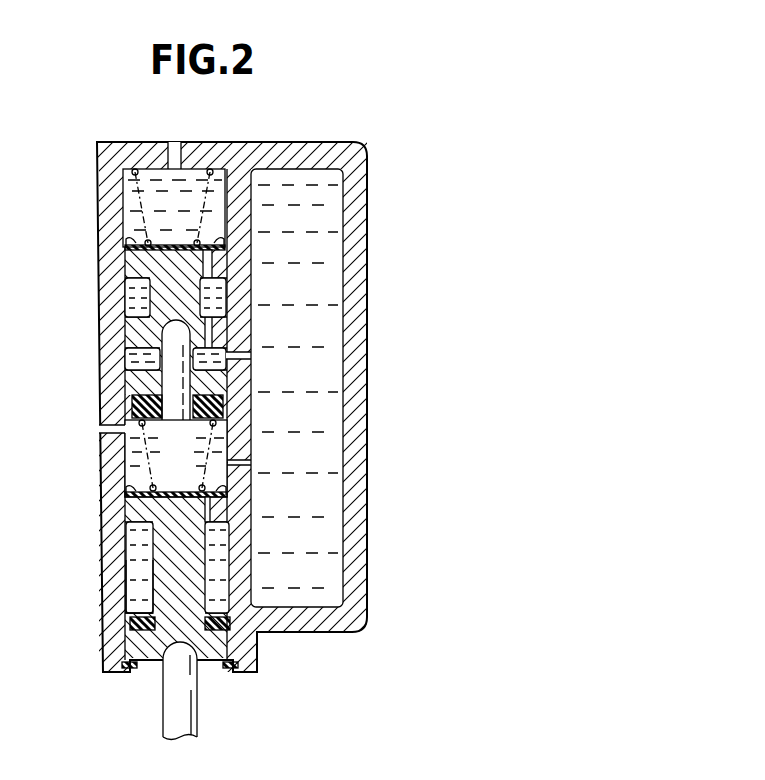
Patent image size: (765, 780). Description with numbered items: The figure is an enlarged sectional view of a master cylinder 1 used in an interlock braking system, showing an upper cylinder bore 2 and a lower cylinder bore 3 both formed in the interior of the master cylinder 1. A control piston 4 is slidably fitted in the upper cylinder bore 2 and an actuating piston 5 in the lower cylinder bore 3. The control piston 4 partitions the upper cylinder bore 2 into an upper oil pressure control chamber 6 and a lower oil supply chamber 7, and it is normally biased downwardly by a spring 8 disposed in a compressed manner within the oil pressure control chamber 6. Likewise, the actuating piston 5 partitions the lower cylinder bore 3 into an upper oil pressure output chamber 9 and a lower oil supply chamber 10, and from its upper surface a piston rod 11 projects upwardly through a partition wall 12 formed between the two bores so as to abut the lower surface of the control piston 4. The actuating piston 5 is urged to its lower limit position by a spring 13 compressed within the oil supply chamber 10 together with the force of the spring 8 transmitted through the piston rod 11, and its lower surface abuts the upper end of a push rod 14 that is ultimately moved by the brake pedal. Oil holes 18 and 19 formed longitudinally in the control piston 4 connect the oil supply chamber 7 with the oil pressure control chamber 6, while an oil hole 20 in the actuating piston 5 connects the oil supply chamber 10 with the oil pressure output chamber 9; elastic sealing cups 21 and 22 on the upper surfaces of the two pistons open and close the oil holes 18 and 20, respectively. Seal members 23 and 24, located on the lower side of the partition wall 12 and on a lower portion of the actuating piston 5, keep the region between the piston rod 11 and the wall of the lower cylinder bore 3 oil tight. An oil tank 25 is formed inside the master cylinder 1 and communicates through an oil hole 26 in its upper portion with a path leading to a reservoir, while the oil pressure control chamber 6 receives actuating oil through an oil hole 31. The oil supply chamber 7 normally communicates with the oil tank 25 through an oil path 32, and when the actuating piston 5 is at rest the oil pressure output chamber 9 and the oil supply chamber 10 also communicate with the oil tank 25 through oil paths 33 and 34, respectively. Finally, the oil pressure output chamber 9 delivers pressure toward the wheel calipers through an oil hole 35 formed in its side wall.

The master cylinder 1 is at (318, 130).
The upper cylinder bore 2 is at (122, 212).
The lower cylinder bore 3 is at (125, 535).
The control piston 4 is at (163, 240).
The actuating piston 5 is at (152, 660).
The oil pressure control chamber 6 is at (127, 200).
The oil supply chamber 7 is at (124, 362).
The spring 8 is at (211, 170).
The oil pressure output chamber 9 is at (135, 470).
The oil supply chamber 10 is at (133, 587).
The piston rod 11 is at (185, 378).
The partition wall 12 is at (130, 381).
The spring 13 is at (215, 434).
The push rod 14 is at (189, 712).
The oil hole 18 is at (218, 243).
The oil hole 19 is at (205, 315).
The oil hole 20 is at (210, 506).
The elastic sealing cup 21 is at (126, 232).
The elastic sealing cup 22 is at (128, 490).
The seal member 23 is at (130, 408).
The seal member 24 is at (130, 626).
The oil tank 25 is at (320, 602).
The oil hole 26 is at (352, 156).
The oil hole 31 is at (175, 148).
The oil path 32 is at (232, 356).
The oil path 33 is at (255, 462).
The oil path 34 is at (232, 537).
The oil hole 35 is at (103, 435).